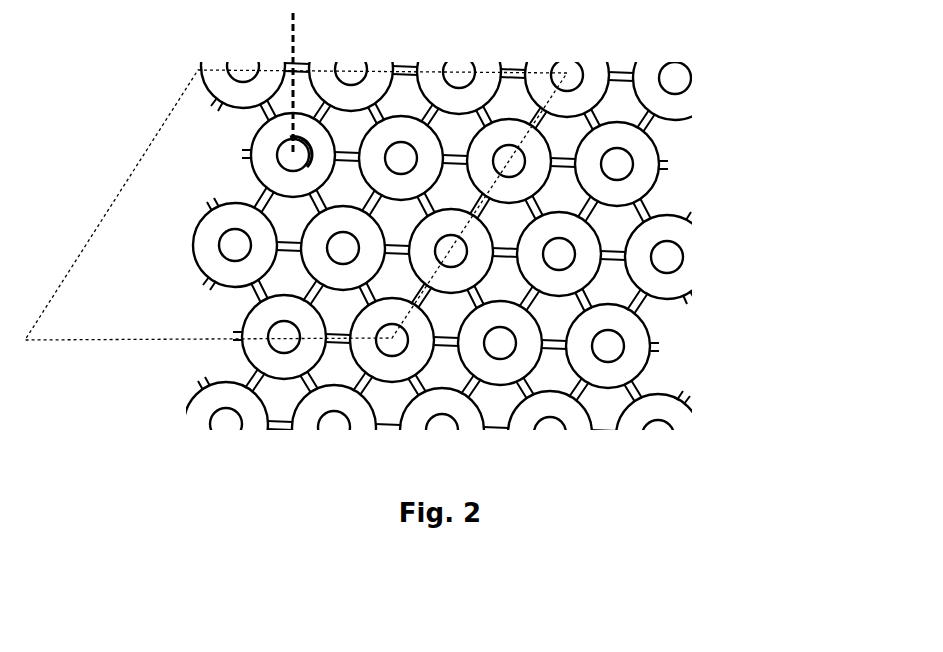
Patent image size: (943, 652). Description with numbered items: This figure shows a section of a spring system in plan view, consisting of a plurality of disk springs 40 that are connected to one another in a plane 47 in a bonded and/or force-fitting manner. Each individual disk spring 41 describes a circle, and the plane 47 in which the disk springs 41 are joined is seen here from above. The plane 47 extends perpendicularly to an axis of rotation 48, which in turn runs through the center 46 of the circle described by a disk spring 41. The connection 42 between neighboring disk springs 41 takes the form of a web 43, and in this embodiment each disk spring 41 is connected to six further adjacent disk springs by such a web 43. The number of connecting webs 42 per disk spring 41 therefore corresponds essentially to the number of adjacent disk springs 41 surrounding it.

The plurality of disk springs 40 is at (434, 245).
The disk spring 41 is at (670, 232).
The connection 42 is at (696, 318).
The web 43 is at (642, 298).
The center 46 is at (287, 153).
The plane 47 is at (140, 215).
The axis of rotation 48 is at (286, 42).